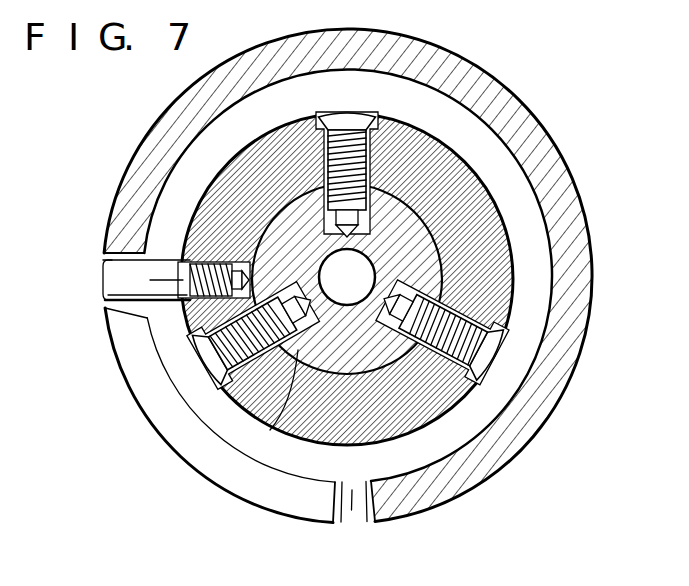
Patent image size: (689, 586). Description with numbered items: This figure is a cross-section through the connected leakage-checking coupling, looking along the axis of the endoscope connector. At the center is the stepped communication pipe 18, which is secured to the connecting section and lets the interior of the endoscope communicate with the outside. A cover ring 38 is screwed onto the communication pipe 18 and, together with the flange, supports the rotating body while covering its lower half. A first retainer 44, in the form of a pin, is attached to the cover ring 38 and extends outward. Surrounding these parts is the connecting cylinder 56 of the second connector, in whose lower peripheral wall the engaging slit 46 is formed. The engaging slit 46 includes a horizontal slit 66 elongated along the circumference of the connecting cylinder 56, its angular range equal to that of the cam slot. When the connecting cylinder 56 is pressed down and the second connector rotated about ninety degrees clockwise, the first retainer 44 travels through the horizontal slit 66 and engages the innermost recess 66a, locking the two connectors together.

The communication pipe 18 is at (347, 283).
The cover ring 38 is at (484, 190).
The first retainer 44 is at (112, 292).
The engaging slit 46 is at (117, 263).
The connecting cylinder 56 is at (547, 402).
The horizontal slit 66 is at (174, 421).
The innermost recess 66a is at (363, 512).